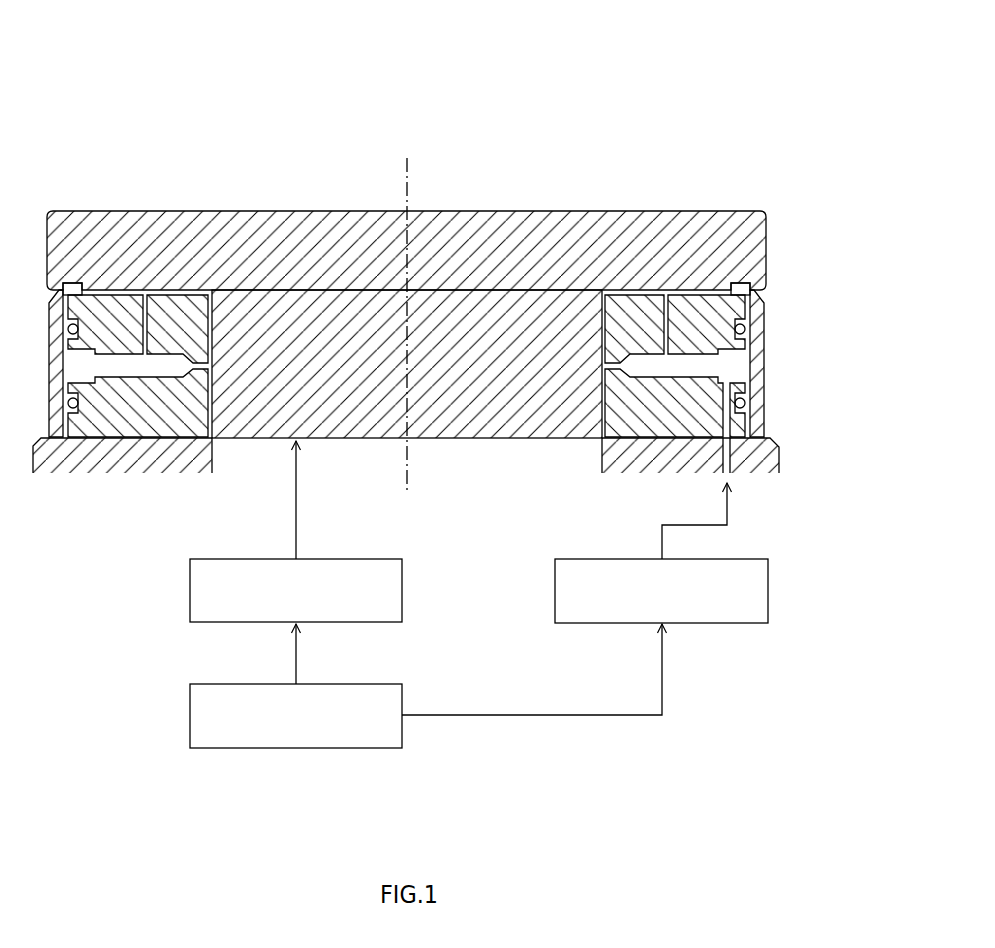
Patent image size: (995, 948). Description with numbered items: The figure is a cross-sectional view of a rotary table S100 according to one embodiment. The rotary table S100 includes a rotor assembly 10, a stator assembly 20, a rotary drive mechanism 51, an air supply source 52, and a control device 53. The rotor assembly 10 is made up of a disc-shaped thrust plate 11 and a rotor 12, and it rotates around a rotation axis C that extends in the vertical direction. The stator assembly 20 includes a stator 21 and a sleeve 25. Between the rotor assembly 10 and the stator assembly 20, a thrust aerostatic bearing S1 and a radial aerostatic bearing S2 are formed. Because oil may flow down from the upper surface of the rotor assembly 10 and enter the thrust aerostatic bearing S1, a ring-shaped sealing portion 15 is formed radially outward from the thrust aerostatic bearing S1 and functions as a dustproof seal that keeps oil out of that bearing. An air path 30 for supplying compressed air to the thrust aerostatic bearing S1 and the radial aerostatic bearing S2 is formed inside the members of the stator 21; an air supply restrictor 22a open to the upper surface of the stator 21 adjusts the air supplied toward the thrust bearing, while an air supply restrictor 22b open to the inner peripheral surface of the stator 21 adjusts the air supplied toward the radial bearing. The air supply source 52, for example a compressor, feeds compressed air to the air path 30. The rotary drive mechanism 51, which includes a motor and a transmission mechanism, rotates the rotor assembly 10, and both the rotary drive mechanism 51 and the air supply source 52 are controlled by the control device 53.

The rotary table S100 is at (113, 59).
The rotor assembly 10 is at (562, 190).
The thrust plate 11 is at (490, 222).
The rotor 12 is at (493, 428).
The sealing portion 15 is at (753, 284).
The stator assembly 20 is at (777, 386).
The stator 21 is at (653, 425).
The air supply restrictor 22a is at (656, 295).
The air supply restrictor 22b is at (613, 372).
The sleeve 25 is at (765, 345).
The air path 30 is at (702, 364).
The rotary drive mechanism 51 is at (190, 595).
The air supply source 52 is at (768, 590).
The control device 53 is at (190, 720).
The thrust aerostatic bearing S1 is at (628, 290).
The radial aerostatic bearing S2 is at (601, 395).
The rotation axis C is at (408, 309).